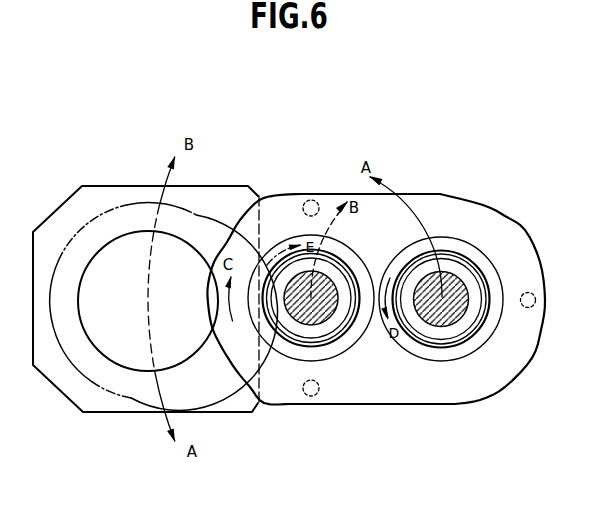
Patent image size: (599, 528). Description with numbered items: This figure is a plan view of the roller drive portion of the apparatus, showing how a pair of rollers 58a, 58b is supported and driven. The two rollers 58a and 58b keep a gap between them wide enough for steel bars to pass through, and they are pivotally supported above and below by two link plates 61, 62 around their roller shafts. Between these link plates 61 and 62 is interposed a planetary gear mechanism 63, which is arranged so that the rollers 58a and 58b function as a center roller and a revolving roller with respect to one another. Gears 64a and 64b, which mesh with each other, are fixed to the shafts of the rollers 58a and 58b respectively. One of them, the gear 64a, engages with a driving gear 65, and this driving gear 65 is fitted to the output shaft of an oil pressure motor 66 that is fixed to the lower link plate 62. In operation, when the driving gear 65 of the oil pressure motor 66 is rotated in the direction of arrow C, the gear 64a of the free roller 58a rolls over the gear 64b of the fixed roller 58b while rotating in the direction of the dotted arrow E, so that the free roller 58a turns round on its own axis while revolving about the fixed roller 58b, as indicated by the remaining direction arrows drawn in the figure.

The roller 58a is at (326, 366).
The roller 58b is at (448, 367).
The link plate 61 is at (376, 328).
The link plate 62 is at (145, 330).
The planetary gear mechanism 63 is at (214, 395).
The gear 64a is at (311, 241).
The gear 64b is at (441, 241).
The driving gear 65 is at (164, 263).
The oil pressure motor 66 is at (148, 352).